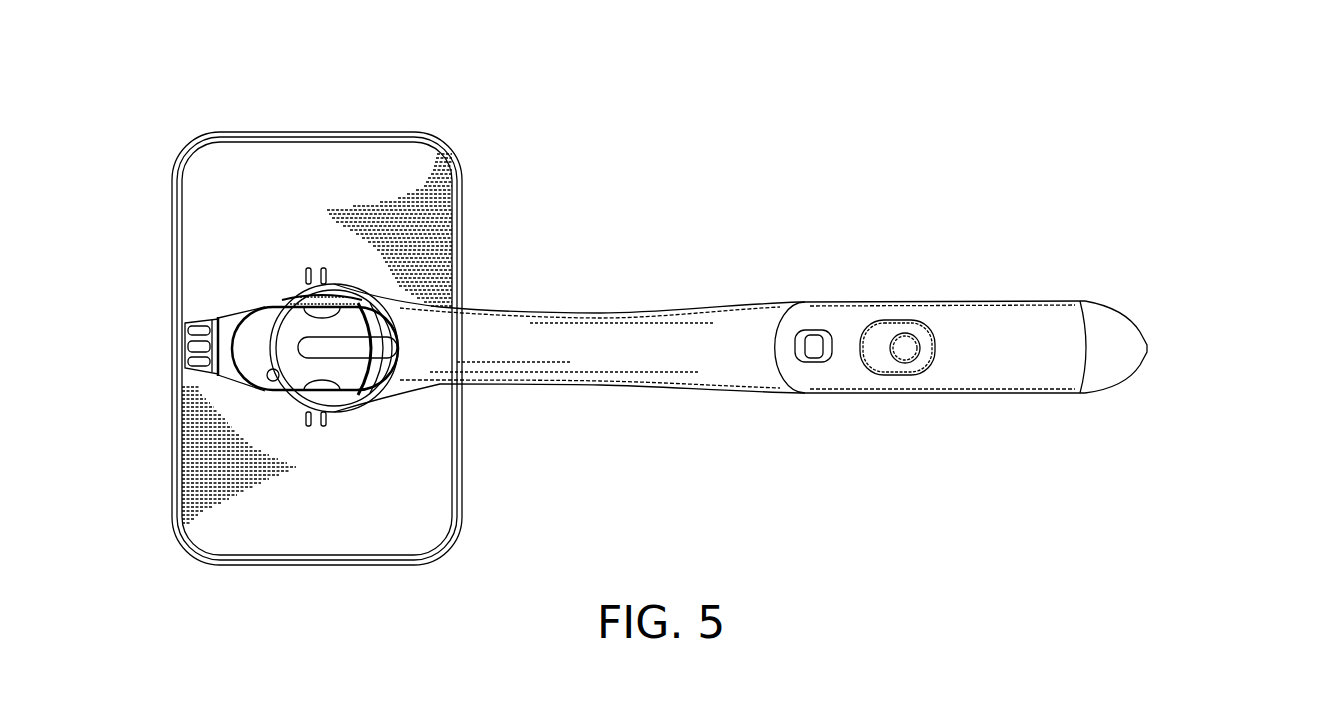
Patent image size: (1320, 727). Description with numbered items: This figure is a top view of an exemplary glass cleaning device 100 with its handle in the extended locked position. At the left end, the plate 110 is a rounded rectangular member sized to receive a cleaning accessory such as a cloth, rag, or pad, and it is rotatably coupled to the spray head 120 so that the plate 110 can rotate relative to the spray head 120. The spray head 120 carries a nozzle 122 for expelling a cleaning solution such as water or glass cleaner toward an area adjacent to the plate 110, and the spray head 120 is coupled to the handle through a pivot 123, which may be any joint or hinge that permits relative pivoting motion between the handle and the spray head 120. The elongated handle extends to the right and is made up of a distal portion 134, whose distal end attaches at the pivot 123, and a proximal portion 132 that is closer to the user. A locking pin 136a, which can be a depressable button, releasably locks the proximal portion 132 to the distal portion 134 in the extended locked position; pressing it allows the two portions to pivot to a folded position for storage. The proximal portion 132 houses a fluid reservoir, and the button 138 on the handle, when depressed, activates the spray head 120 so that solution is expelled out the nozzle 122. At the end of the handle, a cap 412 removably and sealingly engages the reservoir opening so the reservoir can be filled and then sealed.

The glass cleaning device 100 is at (372, 41).
The plate 110 is at (427, 138).
The spray head 120 is at (265, 363).
The nozzle 122 is at (185, 350).
The pivot 123 is at (317, 297).
The proximal portion 132 is at (995, 328).
The distal portion 134 is at (657, 340).
The locking pin 136a is at (813, 357).
The button 138 is at (880, 330).
The cap 412 is at (1150, 347).